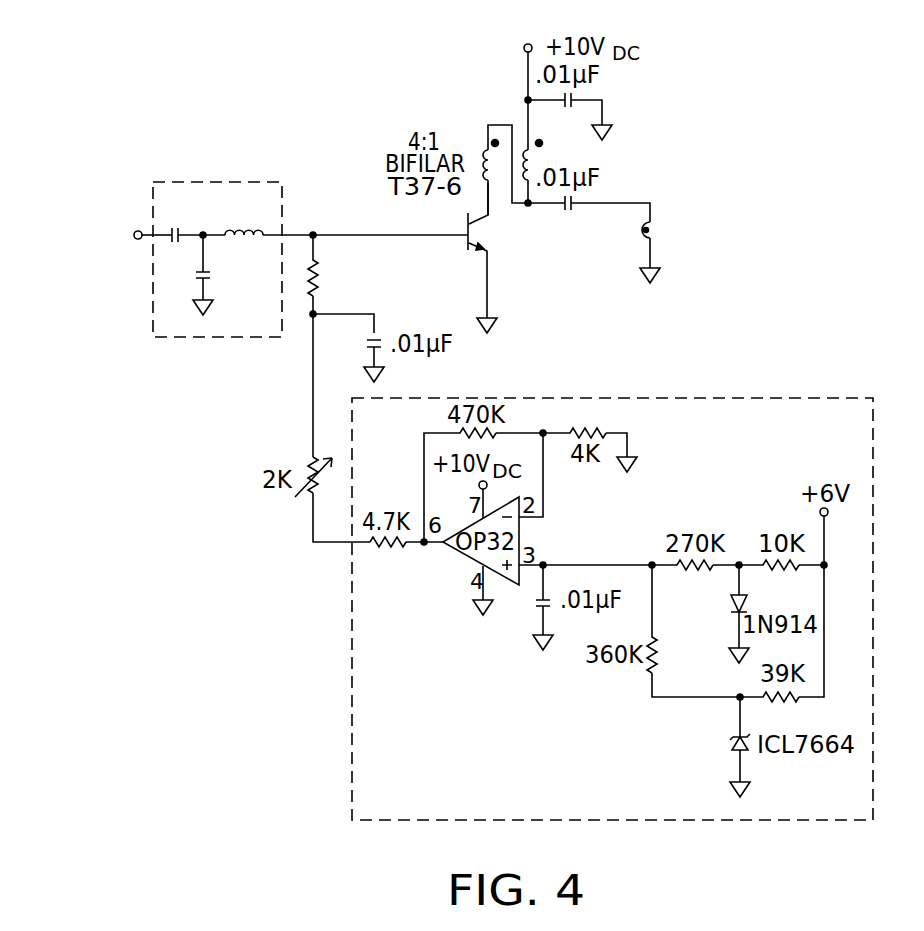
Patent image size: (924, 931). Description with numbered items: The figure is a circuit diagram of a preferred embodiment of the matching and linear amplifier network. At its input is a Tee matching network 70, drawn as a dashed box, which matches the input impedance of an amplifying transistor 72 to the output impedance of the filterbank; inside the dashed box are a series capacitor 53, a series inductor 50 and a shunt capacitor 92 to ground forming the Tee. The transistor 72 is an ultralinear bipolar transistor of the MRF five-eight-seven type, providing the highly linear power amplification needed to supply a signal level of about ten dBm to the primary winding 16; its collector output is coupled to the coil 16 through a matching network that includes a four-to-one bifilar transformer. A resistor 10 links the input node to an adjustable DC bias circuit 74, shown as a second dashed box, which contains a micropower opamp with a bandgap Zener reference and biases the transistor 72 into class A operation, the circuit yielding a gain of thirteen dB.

The resistor 10 is at (337, 265).
The primary winding 16 is at (656, 232).
The inductor of tee matching network 50 is at (244, 219).
The series capacitor of tee matching network 53 is at (175, 223).
The Tee matching network 70 is at (231, 339).
The amplifying transistor 72 is at (467, 242).
The adjustable DC bias circuit 74 is at (350, 811).
The shunt capacitor of tee matching network 92 is at (222, 275).